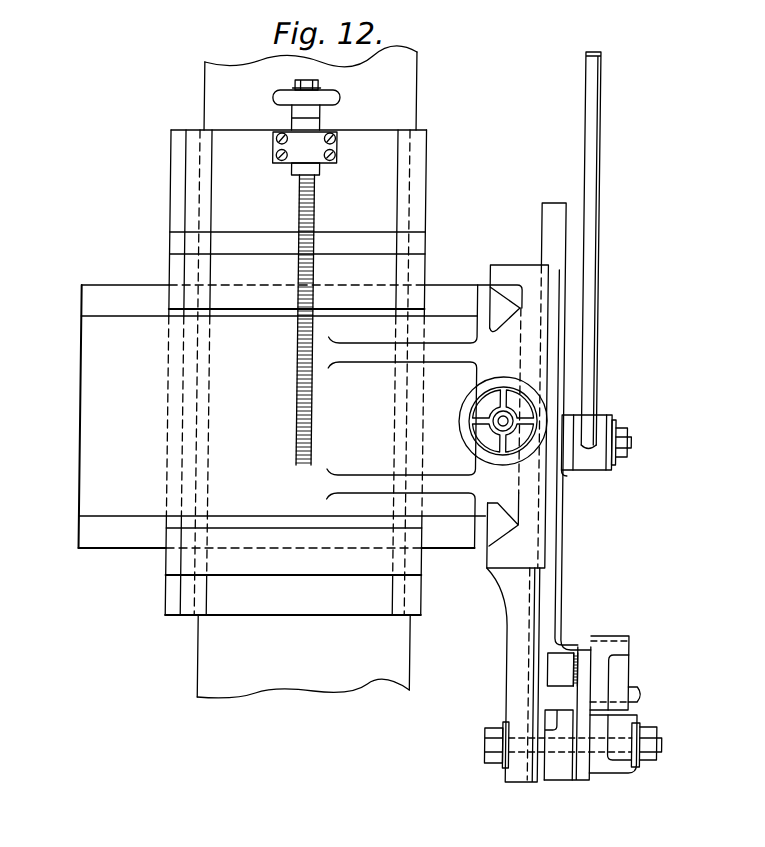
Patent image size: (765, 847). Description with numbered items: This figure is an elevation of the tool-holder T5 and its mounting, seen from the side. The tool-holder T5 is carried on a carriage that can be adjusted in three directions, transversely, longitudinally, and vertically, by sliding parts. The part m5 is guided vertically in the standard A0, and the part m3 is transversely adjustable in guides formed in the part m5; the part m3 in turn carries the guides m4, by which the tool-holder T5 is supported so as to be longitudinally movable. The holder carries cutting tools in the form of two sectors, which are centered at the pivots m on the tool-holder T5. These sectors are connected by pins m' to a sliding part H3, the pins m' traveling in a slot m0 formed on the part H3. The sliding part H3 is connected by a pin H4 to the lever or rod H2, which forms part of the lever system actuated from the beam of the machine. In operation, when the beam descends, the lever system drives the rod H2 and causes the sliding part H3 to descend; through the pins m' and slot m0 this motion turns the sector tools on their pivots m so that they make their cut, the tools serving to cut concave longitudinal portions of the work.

The standard A0 is at (377, 113).
The vertically sliding part m5 is at (295, 372).
The transversely sliding part m3 is at (97, 305).
The guides m4 is at (492, 296).
The sliding part H3 is at (544, 228).
The rod H2 is at (592, 228).
The pin H4 is at (634, 442).
The tool-holder T5 is at (524, 658).
The slot m0 is at (562, 666).
The pins m' is at (598, 649).
The pivots m is at (525, 745).